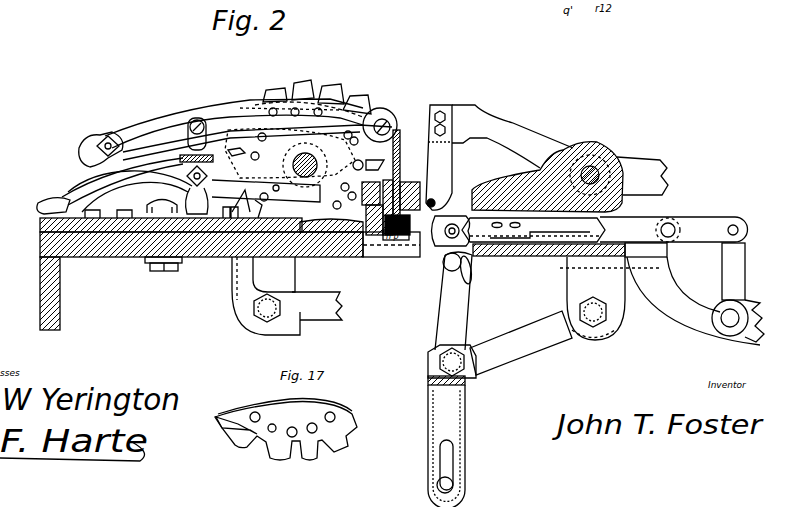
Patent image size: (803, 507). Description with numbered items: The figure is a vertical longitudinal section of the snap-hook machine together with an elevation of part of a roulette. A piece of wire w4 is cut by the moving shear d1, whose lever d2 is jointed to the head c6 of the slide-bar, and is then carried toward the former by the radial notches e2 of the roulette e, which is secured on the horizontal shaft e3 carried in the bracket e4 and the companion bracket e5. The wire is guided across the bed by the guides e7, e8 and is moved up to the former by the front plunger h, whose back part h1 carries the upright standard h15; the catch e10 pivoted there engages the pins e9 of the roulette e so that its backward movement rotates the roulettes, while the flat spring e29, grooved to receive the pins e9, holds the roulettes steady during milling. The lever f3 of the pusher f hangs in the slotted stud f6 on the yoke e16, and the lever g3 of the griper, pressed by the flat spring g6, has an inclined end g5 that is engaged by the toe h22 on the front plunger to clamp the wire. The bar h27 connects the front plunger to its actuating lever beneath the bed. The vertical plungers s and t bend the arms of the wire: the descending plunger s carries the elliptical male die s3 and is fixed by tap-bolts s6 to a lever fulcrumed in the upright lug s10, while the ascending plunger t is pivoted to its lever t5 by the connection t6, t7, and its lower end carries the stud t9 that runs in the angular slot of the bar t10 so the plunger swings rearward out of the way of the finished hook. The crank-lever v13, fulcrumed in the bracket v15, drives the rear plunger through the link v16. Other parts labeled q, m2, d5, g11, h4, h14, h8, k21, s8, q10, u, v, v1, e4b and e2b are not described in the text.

In FIG. 2, the front plunger h is at (171, 223).
In FIG. 2, the inclined toe h22 is at (36, 265).
In FIG. 2, the guide piece q is at (405, 246).
In FIG. 2, the stop piece m2 is at (412, 245).
In FIG. 2, the moving shear d1 is at (266, 296).
In FIG. 2, the head of the slide-bar c6 is at (274, 274).
In FIG. 2, the nut d5 is at (274, 308).
In FIG. 2, the lever of the moving shear d2 is at (317, 306).
In FIG. 2, the guide g11 is at (313, 266).
In FIG. 2, the piece of wire w4 is at (340, 257).
In FIG. 2, the support h4 is at (378, 274).
In FIG. 2, the flat spring g6 is at (85, 192).
In FIG. 2, the arch support h14 is at (128, 180).
In FIG. 2, the bracket e4 is at (179, 197).
In FIG. 2, the guide e8 is at (217, 195).
In FIG. 17, the guide e8 is at (327, 412).
In FIG. 2, the back part of the front plunger h1 is at (270, 204).
In FIG. 2, the pin h8 is at (268, 208).
In FIG. 2, the lever of the griper g3 is at (266, 191).
In FIG. 2, the end of the griper lever g5 is at (334, 200).
In FIG. 2, the guide e7 is at (348, 191).
In FIG. 2, the upright standard h15 is at (112, 131).
In FIG. 2, the catch e10 is at (180, 106).
In FIG. 2, the radial notches e2 is at (313, 94).
In FIG. 2, the lever of the pusher f3 is at (257, 139).
In FIG. 2, the slotted stud f6 is at (197, 152).
In FIG. 2, the yoke e16 is at (189, 155).
In FIG. 2, the bracket e5 is at (233, 147).
In FIG. 2, the pins e9 is at (262, 150).
In FIG. 17, the pins e9 is at (255, 413).
In FIG. 2, the shaft of the roulettes e3 is at (303, 165).
In FIG. 2, the roulette e is at (290, 153).
In FIG. 17, the roulette e is at (286, 430).
In FIG. 2, the pin e4b is at (355, 138).
In FIG. 2, the pin e2b is at (368, 167).
In FIG. 2, the pusher f is at (399, 181).
In FIG. 2, the block k21 is at (391, 207).
In FIG. 2, the tap-bolts s6 is at (434, 157).
In FIG. 2, the descending plunger s is at (433, 184).
In FIG. 2, the male die s3 is at (512, 136).
In FIG. 2, the cam s8 is at (570, 168).
In FIG. 2, the upright lug s10 is at (538, 189).
In FIG. 2, the stop q10 is at (512, 211).
In FIG. 2, the link u is at (451, 231).
In FIG. 2, the pivot v is at (461, 232).
In FIG. 2, the bar v1 is at (533, 230).
In FIG. 2, the link v16 is at (674, 229).
In FIG. 2, the bar h27 is at (670, 252).
In FIG. 2, the bracket v15 is at (693, 294).
In FIG. 2, the crank-lever v13 is at (741, 321).
In FIG. 2, the connection t7 is at (591, 304).
In FIG. 2, the ascending plunger t is at (454, 301).
In FIG. 2, the pin t6 is at (452, 356).
In FIG. 2, the lever of the ascending plunger t5 is at (521, 343).
In FIG. 2, the bar t10 is at (446, 441).
In FIG. 2, the stud t9 is at (454, 490).
In FIG. 17, the flat spring e29 is at (224, 425).